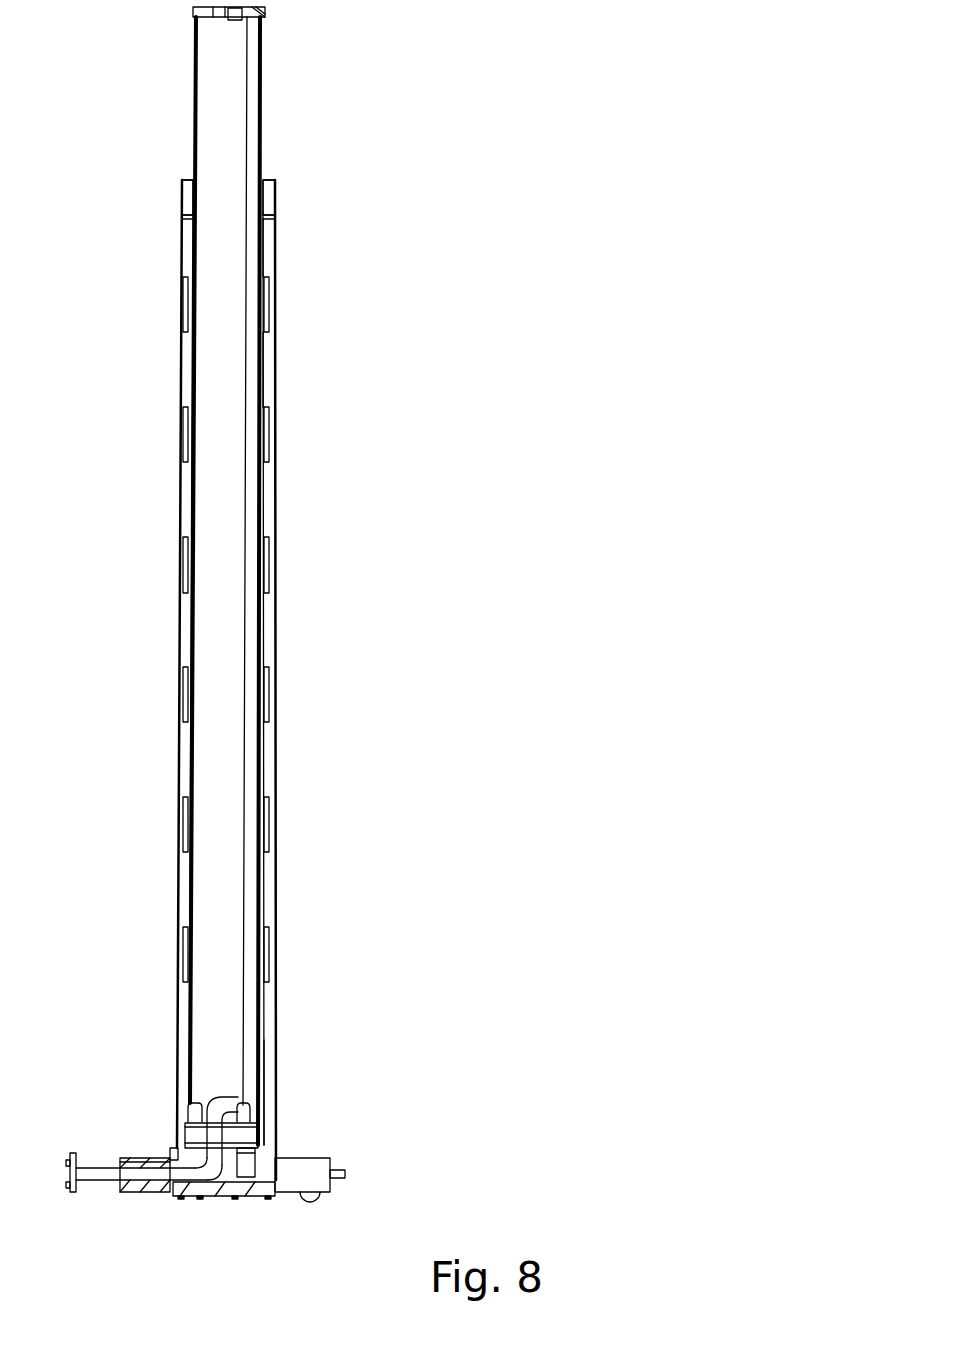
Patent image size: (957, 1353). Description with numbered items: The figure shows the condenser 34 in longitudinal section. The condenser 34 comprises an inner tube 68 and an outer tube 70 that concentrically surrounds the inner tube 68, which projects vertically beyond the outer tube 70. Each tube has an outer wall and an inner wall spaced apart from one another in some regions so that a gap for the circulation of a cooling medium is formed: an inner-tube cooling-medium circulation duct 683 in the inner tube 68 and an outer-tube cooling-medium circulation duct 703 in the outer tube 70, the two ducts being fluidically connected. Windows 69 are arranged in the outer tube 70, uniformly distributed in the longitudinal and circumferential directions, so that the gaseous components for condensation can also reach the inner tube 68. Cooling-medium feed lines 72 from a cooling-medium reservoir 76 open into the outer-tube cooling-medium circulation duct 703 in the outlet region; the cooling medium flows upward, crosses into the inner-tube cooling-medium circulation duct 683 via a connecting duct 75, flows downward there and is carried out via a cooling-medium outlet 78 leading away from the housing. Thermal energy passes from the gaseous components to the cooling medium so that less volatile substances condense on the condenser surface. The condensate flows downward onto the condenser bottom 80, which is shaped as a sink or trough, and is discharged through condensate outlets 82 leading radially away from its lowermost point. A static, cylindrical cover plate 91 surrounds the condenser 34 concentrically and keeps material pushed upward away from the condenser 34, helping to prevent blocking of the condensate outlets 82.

The condenser 34 is at (262, 767).
The inner tube 68 is at (275, 235).
The inner-tube cooling-medium circulation duct 683 is at (275, 267).
The windows 69 is at (273, 567).
The outer tube 70 is at (275, 353).
The outer-tube cooling-medium circulation duct 703 is at (273, 385).
The cooling-medium feed lines 72 is at (237, 1108).
The connecting duct 75 is at (275, 192).
The cooling-medium reservoir 76 is at (247, 1137).
The cooling-medium outlet 78 is at (113, 1172).
The condenser bottom 80 is at (225, 1182).
The condensate outlets 82 is at (250, 1175).
The static cover plate 91 is at (277, 1073).